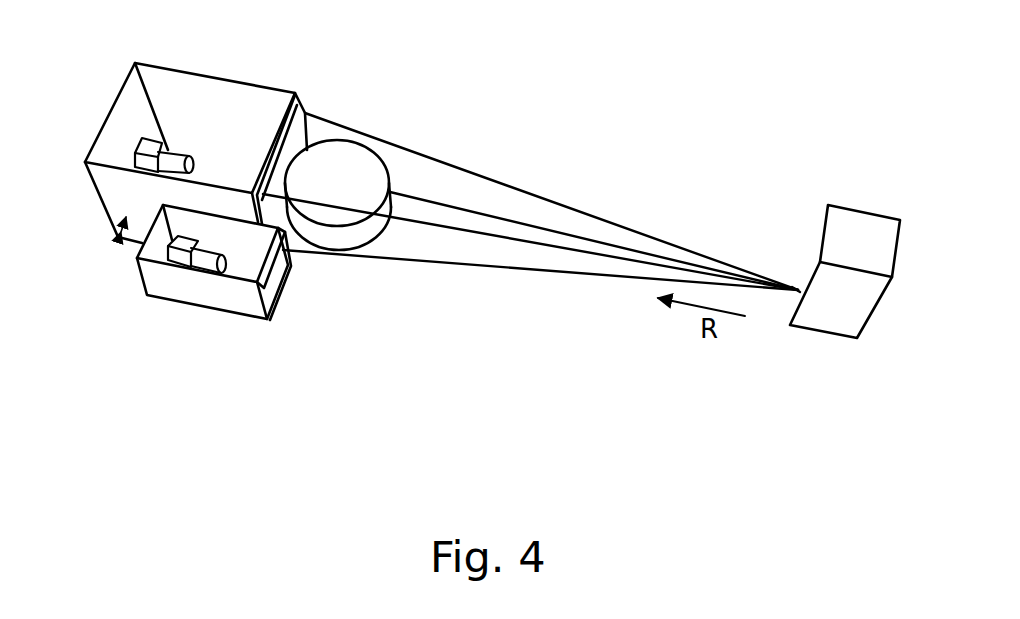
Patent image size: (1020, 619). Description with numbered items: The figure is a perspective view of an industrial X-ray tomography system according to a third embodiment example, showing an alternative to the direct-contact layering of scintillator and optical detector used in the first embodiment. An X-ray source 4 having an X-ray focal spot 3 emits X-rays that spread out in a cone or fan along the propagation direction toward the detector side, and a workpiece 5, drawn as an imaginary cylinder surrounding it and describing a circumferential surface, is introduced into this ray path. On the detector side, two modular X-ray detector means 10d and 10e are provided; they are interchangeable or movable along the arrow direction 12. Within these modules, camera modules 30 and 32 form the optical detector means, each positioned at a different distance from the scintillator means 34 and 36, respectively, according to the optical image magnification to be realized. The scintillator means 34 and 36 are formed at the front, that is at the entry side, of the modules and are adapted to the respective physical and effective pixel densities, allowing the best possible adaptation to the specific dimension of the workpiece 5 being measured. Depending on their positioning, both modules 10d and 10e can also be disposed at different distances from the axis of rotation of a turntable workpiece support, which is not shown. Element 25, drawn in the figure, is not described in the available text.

The X-ray focal spot 3 is at (796, 283).
The X-ray source 4 is at (828, 325).
The workpiece 5 is at (362, 228).
The modular X-ray detector means 10d is at (272, 79).
The modular X-ray detector means 10e is at (262, 329).
The arrow direction 12 is at (118, 225).
The light source / emitter 25 is at (177, 153).
The camera module 30 is at (152, 150).
The camera module 32 is at (180, 255).
The scintillator means 34 is at (303, 110).
The scintillator means 36 is at (283, 296).